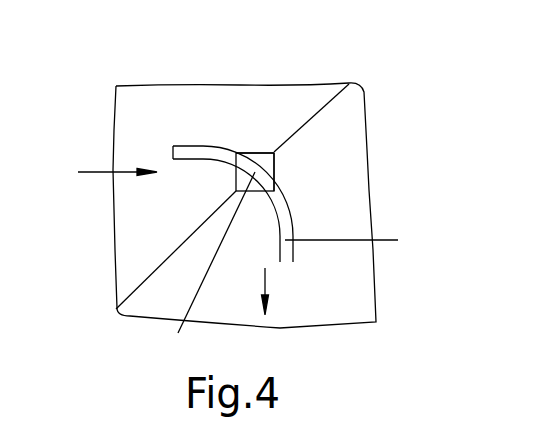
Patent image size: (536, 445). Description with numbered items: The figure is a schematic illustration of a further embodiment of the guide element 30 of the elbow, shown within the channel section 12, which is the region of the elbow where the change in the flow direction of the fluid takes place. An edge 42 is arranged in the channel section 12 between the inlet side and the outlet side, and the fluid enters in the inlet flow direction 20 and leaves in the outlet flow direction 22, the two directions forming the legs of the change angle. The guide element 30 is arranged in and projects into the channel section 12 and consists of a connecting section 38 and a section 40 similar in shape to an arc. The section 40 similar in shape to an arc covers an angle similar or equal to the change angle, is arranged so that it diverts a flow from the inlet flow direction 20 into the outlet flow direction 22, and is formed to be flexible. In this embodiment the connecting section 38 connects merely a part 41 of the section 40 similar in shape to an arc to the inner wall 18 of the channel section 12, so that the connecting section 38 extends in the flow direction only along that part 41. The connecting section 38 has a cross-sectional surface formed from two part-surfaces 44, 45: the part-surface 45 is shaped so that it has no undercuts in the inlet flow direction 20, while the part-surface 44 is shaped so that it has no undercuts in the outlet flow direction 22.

The channel section 12 is at (366, 100).
The inner wall 18 is at (130, 218).
The inlet flow direction 20 is at (93, 168).
The outlet flow direction 22 is at (266, 285).
The guide element 30 is at (290, 210).
The connecting section 38 is at (262, 153).
The section similar in shape to an arc 40 is at (356, 239).
The part of the section similar in shape to an arc 41 is at (202, 267).
The edge 42 is at (140, 285).
The part-surface 44 is at (268, 167).
The part-surface 45 is at (252, 153).